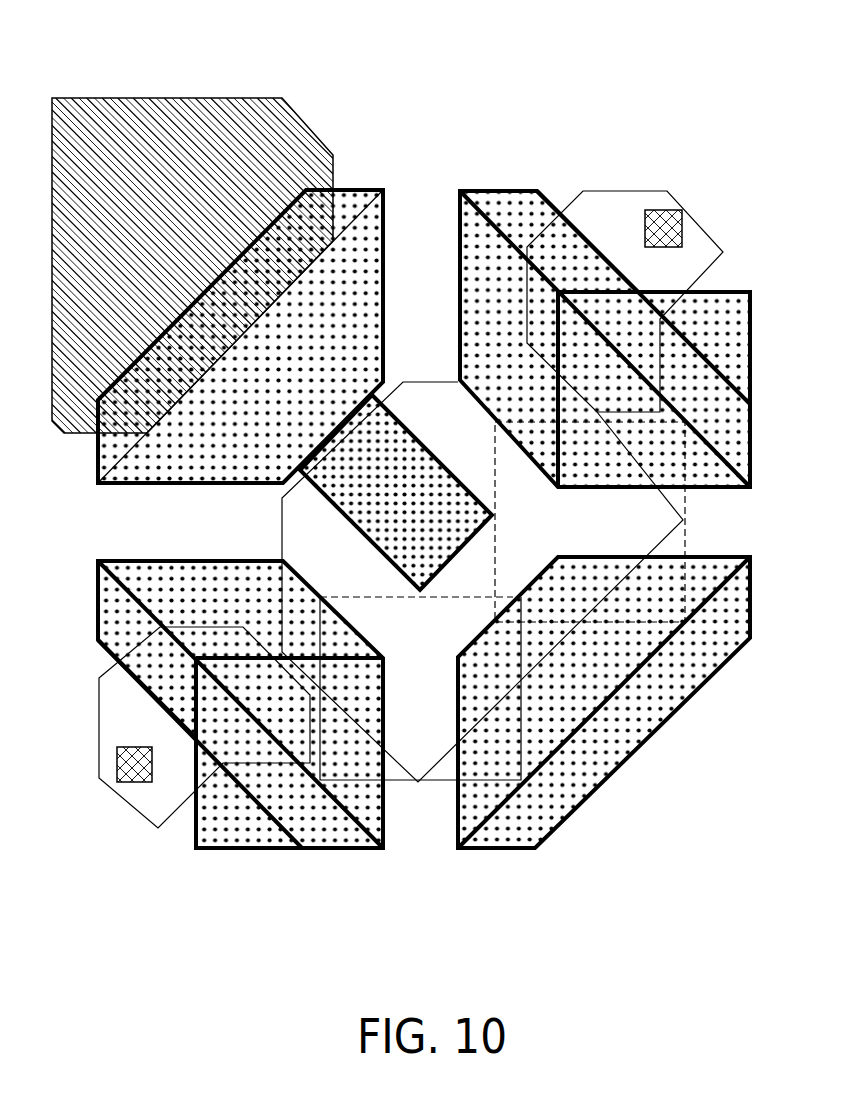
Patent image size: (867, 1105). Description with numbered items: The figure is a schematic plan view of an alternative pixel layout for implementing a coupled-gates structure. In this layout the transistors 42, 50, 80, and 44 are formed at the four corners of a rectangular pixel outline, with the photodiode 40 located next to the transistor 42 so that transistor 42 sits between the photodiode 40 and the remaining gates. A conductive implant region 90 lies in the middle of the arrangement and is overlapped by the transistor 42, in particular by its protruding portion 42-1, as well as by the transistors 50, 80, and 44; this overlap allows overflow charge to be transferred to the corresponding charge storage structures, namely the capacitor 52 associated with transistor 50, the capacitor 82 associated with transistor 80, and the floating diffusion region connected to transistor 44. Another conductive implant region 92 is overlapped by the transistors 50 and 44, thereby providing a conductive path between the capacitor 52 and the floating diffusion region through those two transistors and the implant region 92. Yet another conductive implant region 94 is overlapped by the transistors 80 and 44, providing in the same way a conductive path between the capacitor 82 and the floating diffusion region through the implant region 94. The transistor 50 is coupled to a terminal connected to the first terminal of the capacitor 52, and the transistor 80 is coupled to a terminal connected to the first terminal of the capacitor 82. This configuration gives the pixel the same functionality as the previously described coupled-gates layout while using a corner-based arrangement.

The photodiode 40 is at (183, 78).
The transistor 42 is at (395, 202).
The protruding portion 42-1 is at (407, 425).
The transistor 44 is at (775, 612).
The transistor 50 is at (755, 351).
The capacitor 52 is at (644, 135).
The transistor 80 is at (65, 610).
The capacitor 82 is at (135, 828).
The implant region 90 is at (300, 542).
The implant region 92 is at (689, 508).
The implant region 94 is at (438, 775).